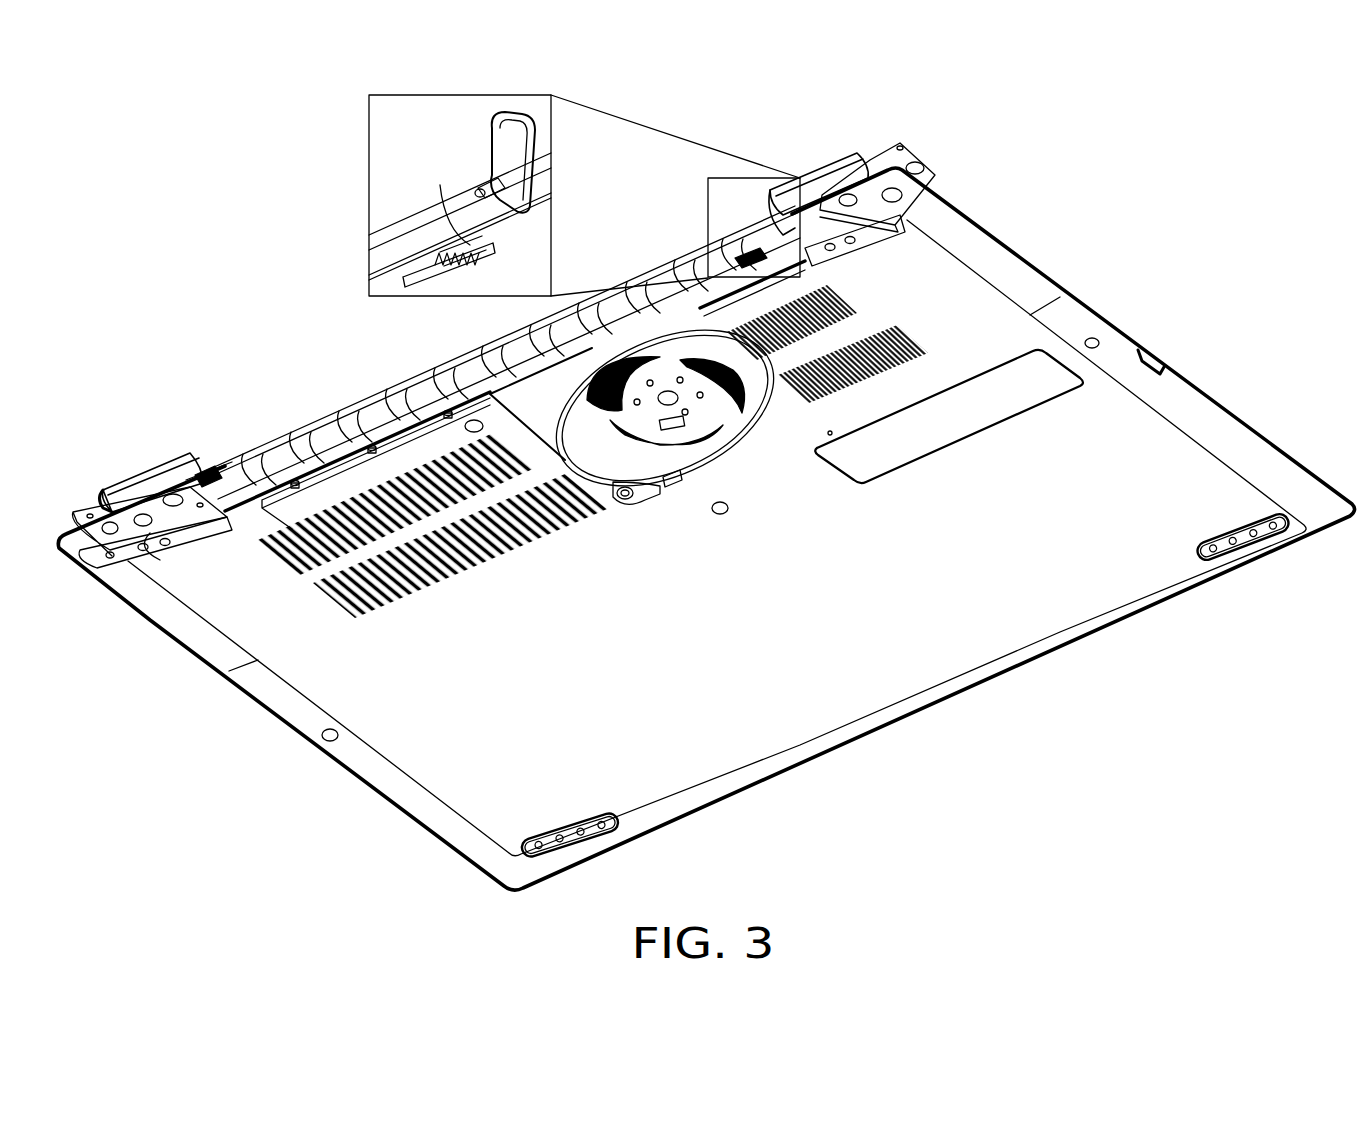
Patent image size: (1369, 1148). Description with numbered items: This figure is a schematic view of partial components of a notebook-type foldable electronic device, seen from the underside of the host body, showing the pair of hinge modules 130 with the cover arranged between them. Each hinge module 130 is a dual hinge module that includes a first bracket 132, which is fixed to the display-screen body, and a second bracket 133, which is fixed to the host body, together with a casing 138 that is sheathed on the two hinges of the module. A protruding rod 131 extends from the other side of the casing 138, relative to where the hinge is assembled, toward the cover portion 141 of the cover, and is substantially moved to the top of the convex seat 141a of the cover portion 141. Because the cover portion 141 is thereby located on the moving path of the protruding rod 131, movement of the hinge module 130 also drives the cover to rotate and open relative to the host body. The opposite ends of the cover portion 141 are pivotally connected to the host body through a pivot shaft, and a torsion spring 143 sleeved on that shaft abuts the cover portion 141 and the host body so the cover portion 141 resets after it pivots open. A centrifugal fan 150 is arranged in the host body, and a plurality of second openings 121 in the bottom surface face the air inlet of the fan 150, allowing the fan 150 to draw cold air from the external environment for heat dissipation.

The second openings 121 is at (838, 296).
The hinge module 130 is at (138, 452).
The protruding rod 131 is at (207, 468).
The first bracket 132 is at (103, 525).
The second bracket 133 is at (183, 545).
The casing 138 is at (522, 112).
The cover portion 141 is at (358, 400).
The convex seat 141a is at (498, 217).
The torsion spring 143 is at (208, 470).
The fan 150 is at (743, 437).